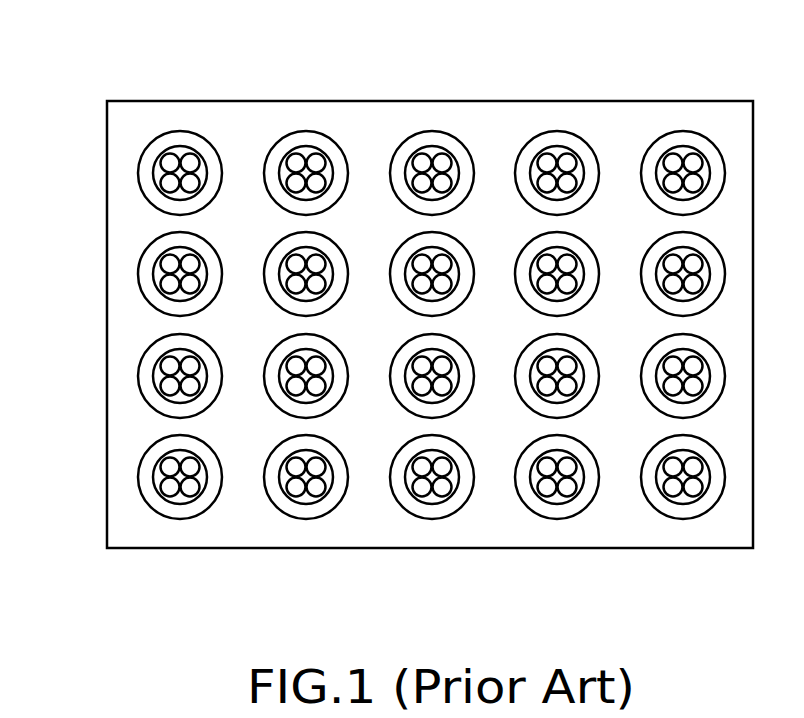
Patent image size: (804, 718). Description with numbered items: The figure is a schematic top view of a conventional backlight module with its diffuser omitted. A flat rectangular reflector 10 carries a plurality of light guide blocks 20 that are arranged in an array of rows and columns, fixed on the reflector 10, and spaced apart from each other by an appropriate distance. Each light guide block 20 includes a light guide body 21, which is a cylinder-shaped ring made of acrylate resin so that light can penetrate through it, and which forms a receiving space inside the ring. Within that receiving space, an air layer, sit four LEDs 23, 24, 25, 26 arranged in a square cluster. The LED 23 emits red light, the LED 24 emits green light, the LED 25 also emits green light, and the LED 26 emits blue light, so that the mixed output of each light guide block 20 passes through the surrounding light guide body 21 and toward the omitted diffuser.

The reflector 10 is at (635, 118).
The light guide block 20 is at (168, 125).
The light guide body 21 is at (214, 166).
The LED 23 is at (163, 158).
The LED 24 is at (190, 162).
The LED 25 is at (168, 183).
The LED 26 is at (190, 184).